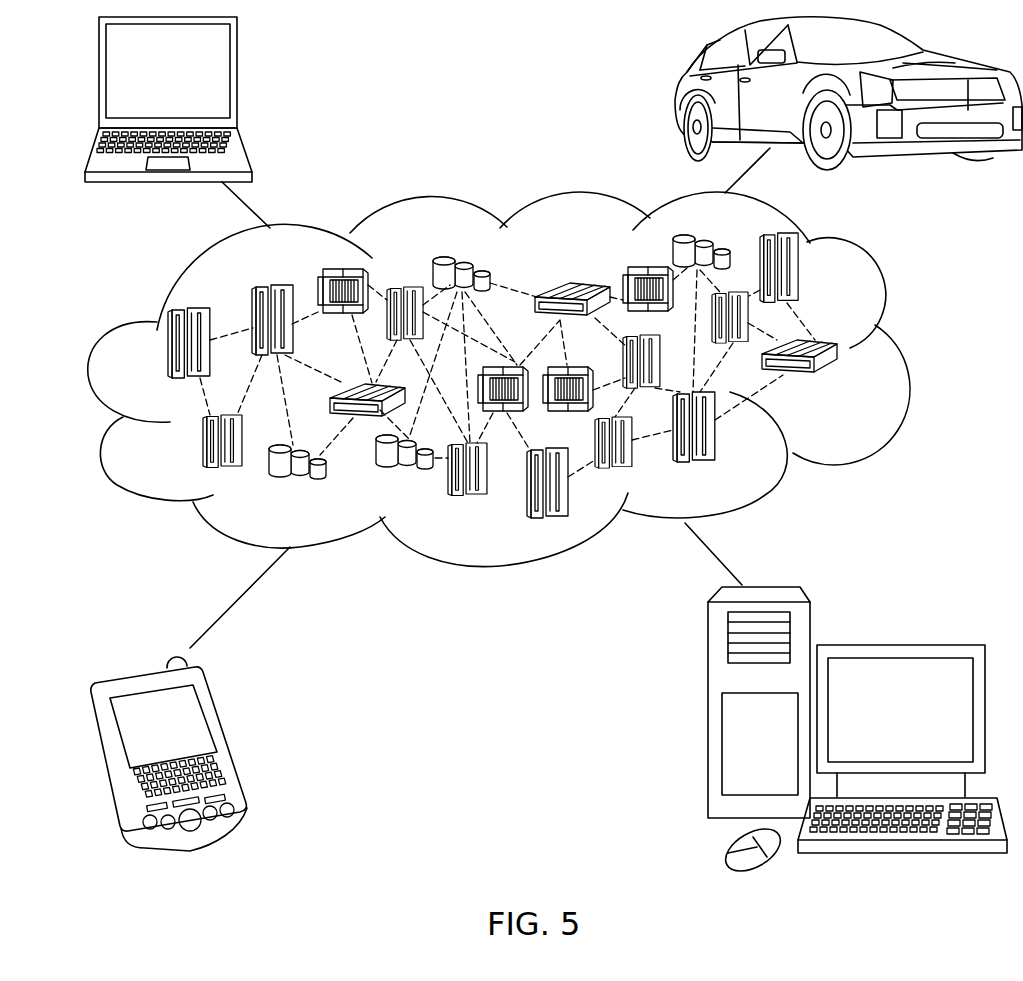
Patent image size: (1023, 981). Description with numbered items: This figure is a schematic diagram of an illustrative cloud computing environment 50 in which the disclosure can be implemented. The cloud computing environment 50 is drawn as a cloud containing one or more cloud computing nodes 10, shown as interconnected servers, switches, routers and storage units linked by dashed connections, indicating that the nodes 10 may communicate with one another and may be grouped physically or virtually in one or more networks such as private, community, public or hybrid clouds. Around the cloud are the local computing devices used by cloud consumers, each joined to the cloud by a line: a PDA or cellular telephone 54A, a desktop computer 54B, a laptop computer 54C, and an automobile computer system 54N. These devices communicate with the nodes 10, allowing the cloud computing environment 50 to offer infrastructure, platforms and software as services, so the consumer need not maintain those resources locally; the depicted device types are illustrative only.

The cloud computing environment 50 is at (898, 352).
The cloud computing node 10 is at (840, 385).
The PDA or cellular telephone 54A is at (227, 740).
The desktop computer 54B is at (898, 643).
The laptop computer 54C is at (237, 78).
The automobile computer system 54N is at (681, 97).